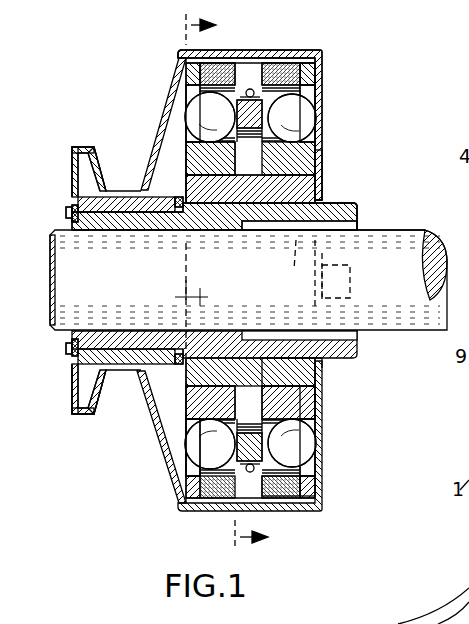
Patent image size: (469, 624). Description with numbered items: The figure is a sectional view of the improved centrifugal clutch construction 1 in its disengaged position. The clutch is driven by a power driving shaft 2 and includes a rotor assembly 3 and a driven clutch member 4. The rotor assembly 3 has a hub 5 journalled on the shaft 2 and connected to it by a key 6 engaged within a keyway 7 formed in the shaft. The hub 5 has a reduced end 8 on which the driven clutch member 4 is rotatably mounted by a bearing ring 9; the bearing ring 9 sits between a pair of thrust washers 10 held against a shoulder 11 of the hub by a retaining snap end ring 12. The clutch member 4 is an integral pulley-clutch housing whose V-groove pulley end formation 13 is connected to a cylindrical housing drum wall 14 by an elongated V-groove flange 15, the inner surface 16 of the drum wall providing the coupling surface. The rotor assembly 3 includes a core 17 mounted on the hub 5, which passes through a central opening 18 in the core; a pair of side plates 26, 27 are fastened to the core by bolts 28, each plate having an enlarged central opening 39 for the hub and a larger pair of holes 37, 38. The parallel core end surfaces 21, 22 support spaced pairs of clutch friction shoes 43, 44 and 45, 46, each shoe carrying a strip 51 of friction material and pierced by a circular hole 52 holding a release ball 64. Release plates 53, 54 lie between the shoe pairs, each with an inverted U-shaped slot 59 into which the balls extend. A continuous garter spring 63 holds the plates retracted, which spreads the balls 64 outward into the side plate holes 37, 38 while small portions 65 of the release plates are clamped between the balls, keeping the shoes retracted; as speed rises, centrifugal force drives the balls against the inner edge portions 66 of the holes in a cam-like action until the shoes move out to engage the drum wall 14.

The clutch construction 1 is at (128, 92).
The power driving shaft 2 is at (392, 250).
The rotor assembly 3 is at (330, 190).
The driven clutch member 4 is at (146, 143).
The hub 5 is at (375, 222).
The key 6 is at (262, 232).
The keyway 7 is at (294, 270).
The reduced end 8 is at (40, 278).
The bearing ring 9 is at (121, 212).
The thrust washers 10 is at (77, 205).
The shoulder 11 is at (187, 355).
The retaining snap end ring 12 is at (72, 213).
The V-groove pulley end formation 13 is at (75, 143).
The cylindrical housing drum wall 14 is at (264, 68).
The elongated V-groove flange 15 is at (173, 76).
The inner surface 16 is at (232, 62).
The core 17 is at (318, 191).
The central opening 18 is at (349, 206).
The end surface 21 is at (293, 183).
The end surface 22 is at (316, 414).
The side plate 26 is at (190, 409).
The side plate 27 is at (310, 400).
The bolts 28 is at (352, 280).
The hole 37 is at (313, 467).
The hole 38 is at (315, 100).
The enlarged central opening 39 is at (325, 366).
The clutch friction shoe 43 is at (215, 160).
The clutch friction shoe 44 is at (295, 83).
The clutch friction shoe 45 is at (213, 397).
The clutch friction shoe 46 is at (291, 395).
The strip of friction material 51 is at (293, 494).
The circular hole 52 is at (307, 490).
The release plate 53 is at (257, 108).
The release plate 54 is at (252, 473).
The inverted U-shaped slot 59 is at (251, 128).
The garter spring 63 is at (251, 89).
The release ball 64 is at (303, 120).
The small portion 65 is at (222, 478).
The inner edge portion 66 is at (198, 146).